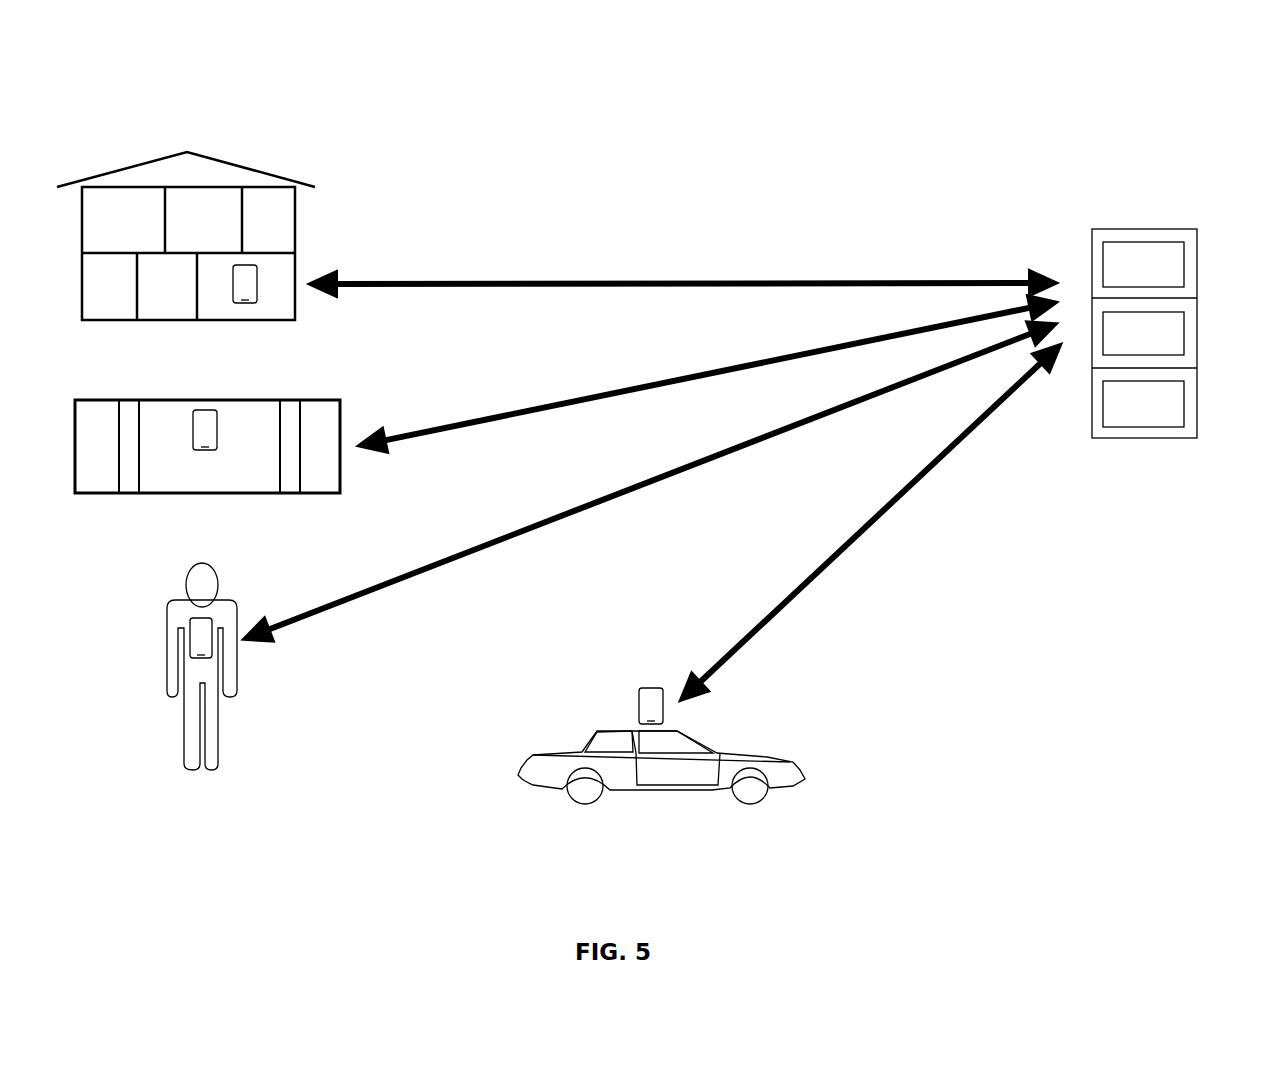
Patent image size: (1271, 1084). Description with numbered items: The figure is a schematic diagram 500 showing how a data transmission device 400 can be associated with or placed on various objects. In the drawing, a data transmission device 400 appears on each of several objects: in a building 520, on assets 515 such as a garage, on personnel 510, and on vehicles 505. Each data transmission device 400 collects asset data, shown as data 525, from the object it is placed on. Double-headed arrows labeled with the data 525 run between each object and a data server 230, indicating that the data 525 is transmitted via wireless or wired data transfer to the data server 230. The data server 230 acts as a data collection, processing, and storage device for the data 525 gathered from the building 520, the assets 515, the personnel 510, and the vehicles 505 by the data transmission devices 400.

The schematic diagram 500 is at (1062, 92).
The building 520 is at (232, 163).
The assets 515 is at (190, 398).
The personnel 510 is at (160, 657).
The vehicles 505 is at (532, 753).
The data transmission device 400 is at (260, 285).
The data server 230 is at (1143, 227).
The data 525 is at (652, 467).